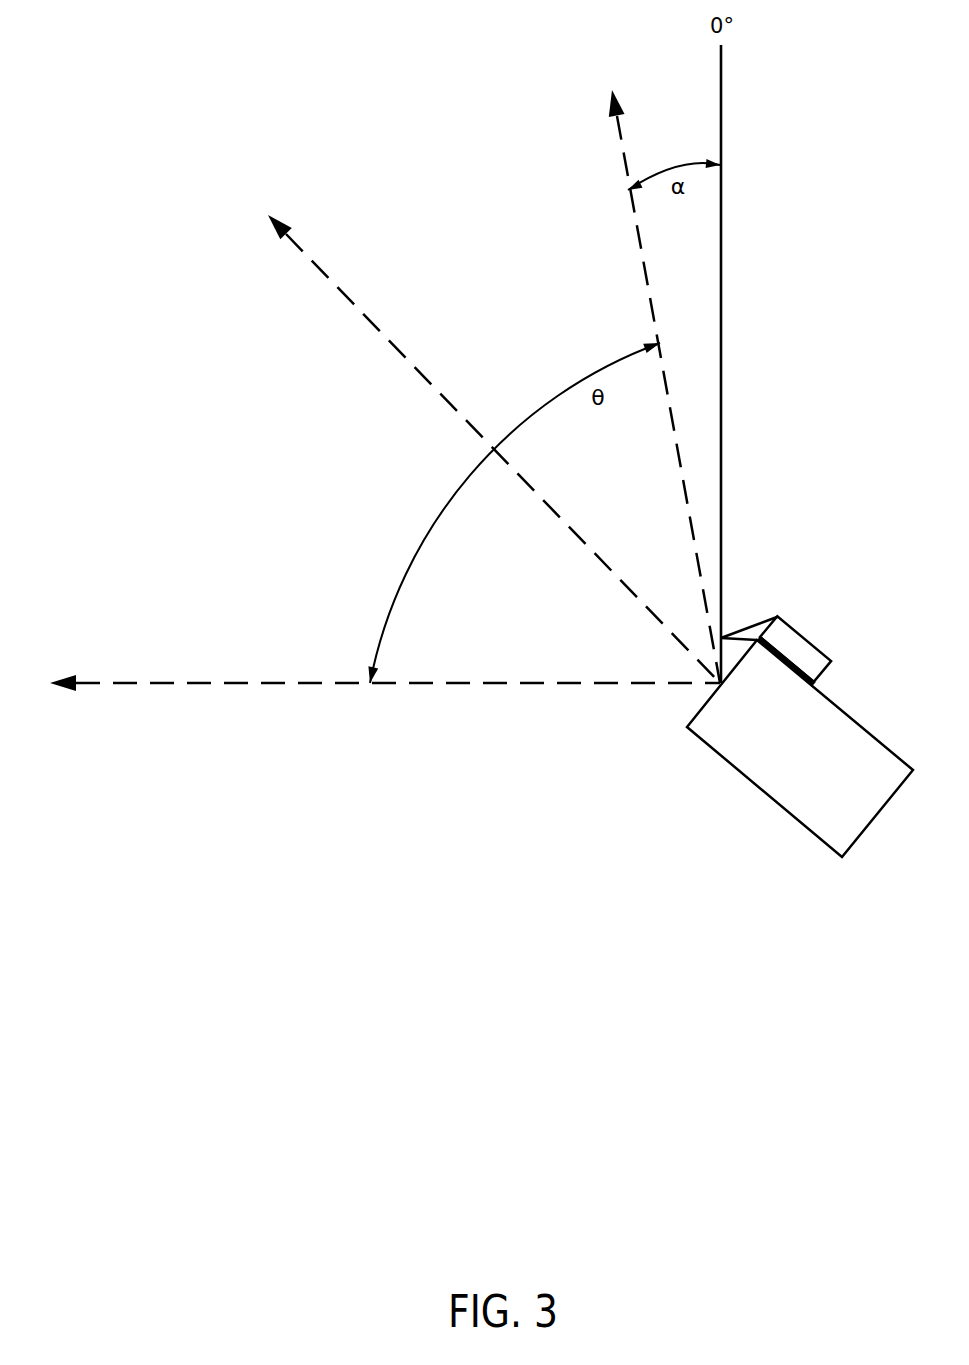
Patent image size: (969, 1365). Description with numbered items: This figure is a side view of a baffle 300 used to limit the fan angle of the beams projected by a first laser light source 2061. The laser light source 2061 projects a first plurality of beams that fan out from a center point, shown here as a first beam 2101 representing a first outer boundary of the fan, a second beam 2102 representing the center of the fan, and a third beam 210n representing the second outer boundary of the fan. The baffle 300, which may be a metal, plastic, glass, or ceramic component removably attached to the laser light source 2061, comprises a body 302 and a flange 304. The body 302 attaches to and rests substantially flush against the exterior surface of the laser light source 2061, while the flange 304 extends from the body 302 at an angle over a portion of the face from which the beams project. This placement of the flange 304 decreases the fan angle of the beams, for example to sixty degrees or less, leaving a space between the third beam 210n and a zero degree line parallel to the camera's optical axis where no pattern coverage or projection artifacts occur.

The first beam 2101 is at (385, 734).
The second beam 2102 is at (494, 449).
The third beam 210n is at (626, 386).
The first laser light source 2061 is at (800, 748).
The baffle 300 is at (803, 636).
The body 302 is at (826, 672).
The flange 304 is at (750, 628).